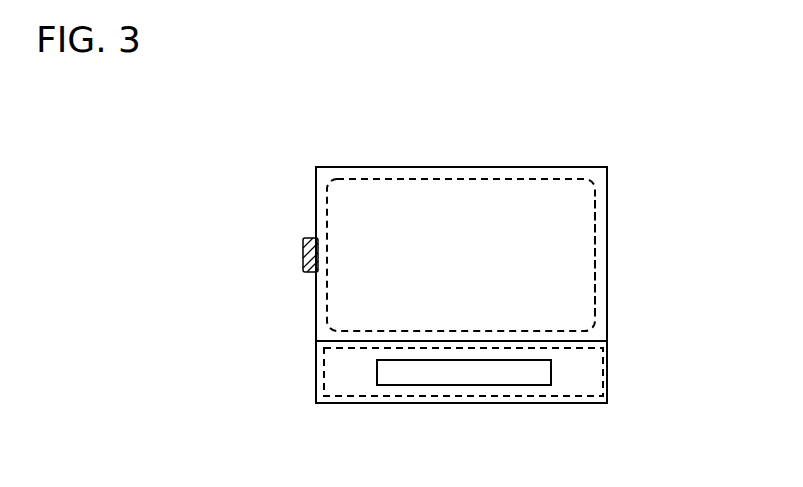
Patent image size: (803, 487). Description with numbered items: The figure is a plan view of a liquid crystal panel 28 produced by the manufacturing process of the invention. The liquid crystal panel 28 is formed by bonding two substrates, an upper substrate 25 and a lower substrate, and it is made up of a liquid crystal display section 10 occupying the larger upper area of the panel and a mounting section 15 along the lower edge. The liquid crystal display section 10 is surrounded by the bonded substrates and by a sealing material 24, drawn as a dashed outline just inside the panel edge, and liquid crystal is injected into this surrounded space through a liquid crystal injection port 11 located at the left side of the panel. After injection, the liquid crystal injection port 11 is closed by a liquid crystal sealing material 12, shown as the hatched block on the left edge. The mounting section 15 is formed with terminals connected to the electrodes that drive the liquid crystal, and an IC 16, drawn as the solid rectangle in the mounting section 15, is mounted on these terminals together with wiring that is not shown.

The liquid crystal display section 10 is at (580, 201).
The liquid crystal injection port 11 is at (318, 272).
The liquid crystal sealing material 12 is at (305, 262).
The mounting section 15 is at (593, 378).
The IC 16 is at (514, 377).
The sealing material 24 is at (597, 230).
The upper substrate 25 is at (607, 323).
The liquid crystal panel 28 is at (625, 279).